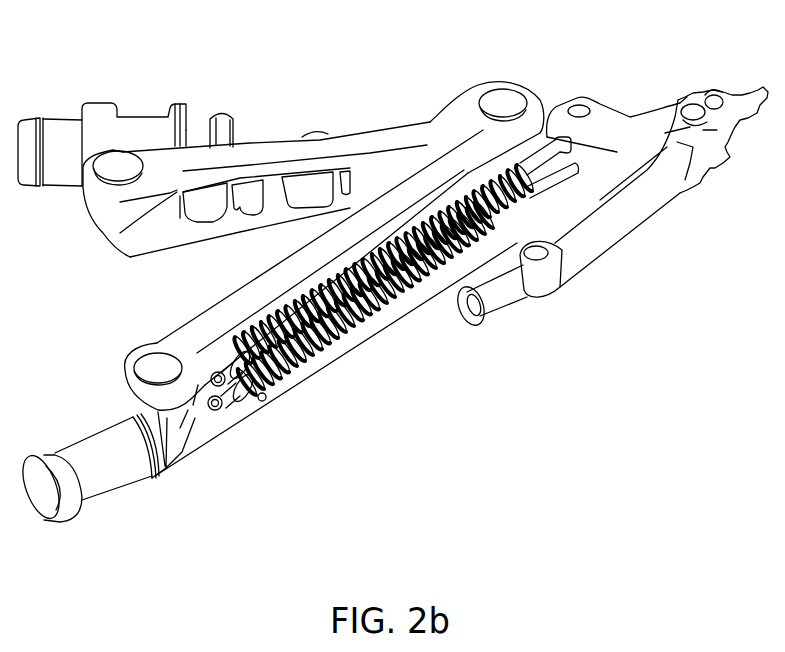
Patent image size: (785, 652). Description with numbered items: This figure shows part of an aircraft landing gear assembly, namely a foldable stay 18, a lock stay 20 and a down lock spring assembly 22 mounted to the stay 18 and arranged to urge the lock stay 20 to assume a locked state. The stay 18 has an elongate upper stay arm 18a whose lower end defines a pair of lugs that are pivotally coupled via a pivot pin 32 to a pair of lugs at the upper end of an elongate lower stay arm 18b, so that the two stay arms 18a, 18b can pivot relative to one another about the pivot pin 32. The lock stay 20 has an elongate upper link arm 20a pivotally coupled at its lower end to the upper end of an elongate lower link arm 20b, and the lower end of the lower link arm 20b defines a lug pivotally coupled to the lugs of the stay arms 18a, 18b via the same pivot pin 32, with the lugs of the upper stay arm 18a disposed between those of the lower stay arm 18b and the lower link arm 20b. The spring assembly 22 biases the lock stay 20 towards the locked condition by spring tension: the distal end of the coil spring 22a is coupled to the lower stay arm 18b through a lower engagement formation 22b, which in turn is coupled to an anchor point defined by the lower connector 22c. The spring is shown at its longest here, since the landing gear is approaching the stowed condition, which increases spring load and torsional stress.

The foldable stay 18 is at (367, 270).
The upper stay arm 18a is at (268, 150).
The lower stay arm 18b is at (200, 327).
The pivot pin 32 is at (502, 97).
The lock stay 20 is at (610, 190).
The upper link arm 20a is at (610, 245).
The lower link arm 20b is at (607, 123).
The down lock spring assembly 22 is at (367, 337).
The spring 22a is at (295, 380).
The lower engagement formation 22b is at (225, 406).
The lower connector 22c is at (205, 412).